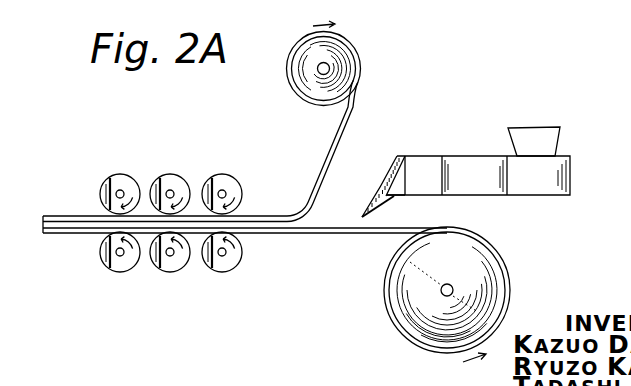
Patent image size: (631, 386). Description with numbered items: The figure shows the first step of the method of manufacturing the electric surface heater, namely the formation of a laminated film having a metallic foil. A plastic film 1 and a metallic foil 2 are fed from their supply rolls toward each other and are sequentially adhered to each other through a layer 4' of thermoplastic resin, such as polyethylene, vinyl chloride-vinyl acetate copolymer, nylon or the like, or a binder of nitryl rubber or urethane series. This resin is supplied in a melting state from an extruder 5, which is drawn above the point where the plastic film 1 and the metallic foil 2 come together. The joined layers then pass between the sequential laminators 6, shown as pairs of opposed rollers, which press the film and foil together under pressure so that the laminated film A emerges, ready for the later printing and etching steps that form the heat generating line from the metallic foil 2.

The plastic film 1 is at (503, 262).
The metallic foil 2 is at (352, 107).
The layer of thermoplastic resin 4' is at (373, 186).
The extruder 5 is at (487, 156).
The sequential laminators 6 is at (172, 174).
The laminated film A is at (53, 216).